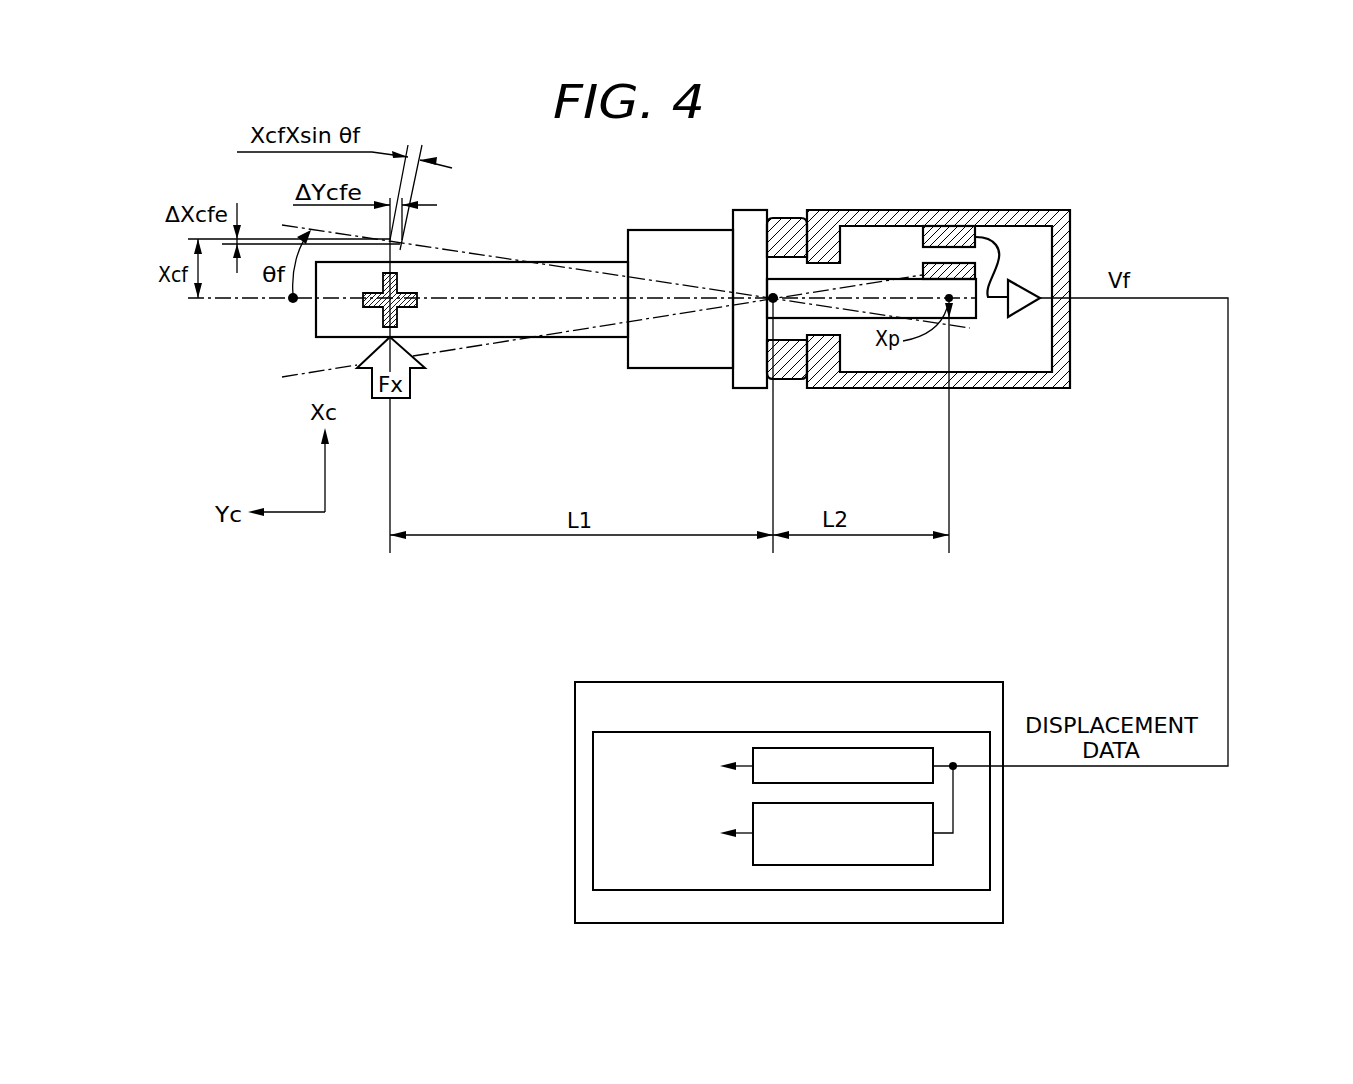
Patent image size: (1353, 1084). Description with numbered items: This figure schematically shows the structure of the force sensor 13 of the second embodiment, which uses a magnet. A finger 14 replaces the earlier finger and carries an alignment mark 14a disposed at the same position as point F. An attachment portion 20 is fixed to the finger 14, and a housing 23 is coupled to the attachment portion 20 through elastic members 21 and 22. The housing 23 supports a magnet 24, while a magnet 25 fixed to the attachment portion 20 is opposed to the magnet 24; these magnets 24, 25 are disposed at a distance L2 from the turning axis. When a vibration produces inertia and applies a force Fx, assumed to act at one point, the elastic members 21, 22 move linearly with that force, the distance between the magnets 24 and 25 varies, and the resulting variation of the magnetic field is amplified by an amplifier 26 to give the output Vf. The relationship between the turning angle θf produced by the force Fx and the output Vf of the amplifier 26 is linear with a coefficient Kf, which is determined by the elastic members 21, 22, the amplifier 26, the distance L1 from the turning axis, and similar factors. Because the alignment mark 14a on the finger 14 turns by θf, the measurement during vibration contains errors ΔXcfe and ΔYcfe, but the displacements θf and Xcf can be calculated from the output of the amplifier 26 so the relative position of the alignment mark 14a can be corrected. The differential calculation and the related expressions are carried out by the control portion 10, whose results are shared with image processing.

The control portion 10 is at (917, 692).
The force sensor 13 is at (1072, 443).
The finger 14 is at (570, 278).
The alignment mark 14a is at (417, 293).
The attachment portion 20 is at (740, 374).
The elastic member 21 is at (797, 389).
The elastic member 22 is at (785, 218).
The housing 23 is at (1070, 221).
The magnet 24 is at (950, 230).
The magnet 25 is at (923, 265).
The amplifier 26 is at (1022, 287).